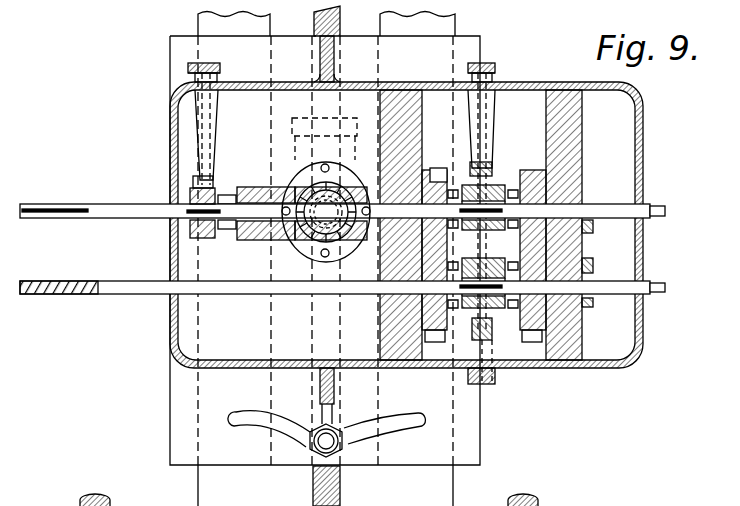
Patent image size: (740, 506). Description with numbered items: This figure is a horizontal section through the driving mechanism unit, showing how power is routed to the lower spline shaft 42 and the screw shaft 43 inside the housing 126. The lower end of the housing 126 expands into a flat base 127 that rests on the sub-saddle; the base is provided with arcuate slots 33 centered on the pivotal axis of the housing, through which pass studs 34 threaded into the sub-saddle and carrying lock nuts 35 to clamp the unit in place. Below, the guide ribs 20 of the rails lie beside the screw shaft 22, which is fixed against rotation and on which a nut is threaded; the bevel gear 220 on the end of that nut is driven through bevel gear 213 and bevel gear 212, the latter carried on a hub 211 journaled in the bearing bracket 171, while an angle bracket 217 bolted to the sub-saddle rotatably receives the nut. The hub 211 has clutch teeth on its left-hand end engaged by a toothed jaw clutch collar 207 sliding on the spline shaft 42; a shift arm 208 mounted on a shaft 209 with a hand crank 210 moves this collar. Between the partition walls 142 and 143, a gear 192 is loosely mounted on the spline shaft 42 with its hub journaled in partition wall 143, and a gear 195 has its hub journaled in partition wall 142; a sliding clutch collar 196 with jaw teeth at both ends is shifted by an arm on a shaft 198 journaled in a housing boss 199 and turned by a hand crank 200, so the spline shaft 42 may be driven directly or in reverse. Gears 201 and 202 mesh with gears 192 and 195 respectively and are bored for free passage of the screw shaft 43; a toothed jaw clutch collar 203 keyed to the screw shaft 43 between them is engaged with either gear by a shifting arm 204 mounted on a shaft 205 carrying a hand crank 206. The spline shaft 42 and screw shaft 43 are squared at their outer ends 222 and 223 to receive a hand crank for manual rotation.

The guide ribs 20 is at (198, 493).
The screw shaft 22 is at (338, 12).
The arcuate slots 33 is at (283, 446).
The studs 34 is at (328, 439).
The lock nuts 35 is at (312, 430).
The lower spline shaft 42 is at (126, 203).
The screw shaft 43 is at (106, 283).
The housing 126 is at (644, 166).
The flat base 127 is at (468, 448).
The partition wall 142 is at (411, 123).
The partition wall 143 is at (570, 127).
The bearing bracket 171 is at (258, 240).
The gear 192 is at (447, 176).
The gear 195 is at (432, 168).
The sliding clutch collar 196 is at (492, 176).
The shaft 198 is at (487, 128).
The housing boss 199 is at (494, 107).
The hand crank 200 is at (496, 69).
The gear 201 is at (531, 332).
The gear 202 is at (436, 332).
The toothed jaw clutch collar 203 is at (472, 258).
The shifting arm 204 is at (492, 330).
The shaft 205 is at (497, 345).
The hand crank 206 is at (487, 384).
The toothed jaw clutch collar 207 is at (205, 240).
The shift arm 208 is at (213, 180).
The shaft 209 is at (215, 134).
The hand crank 210 is at (212, 70).
The hub 211 is at (258, 188).
The bevel gear 212 is at (298, 178).
The bevel gear 213 is at (350, 178).
The angle bracket 217 is at (292, 135).
The bevel gear 220 is at (340, 226).
The squared outer end 222 is at (665, 208).
The squared outer end 223 is at (657, 281).